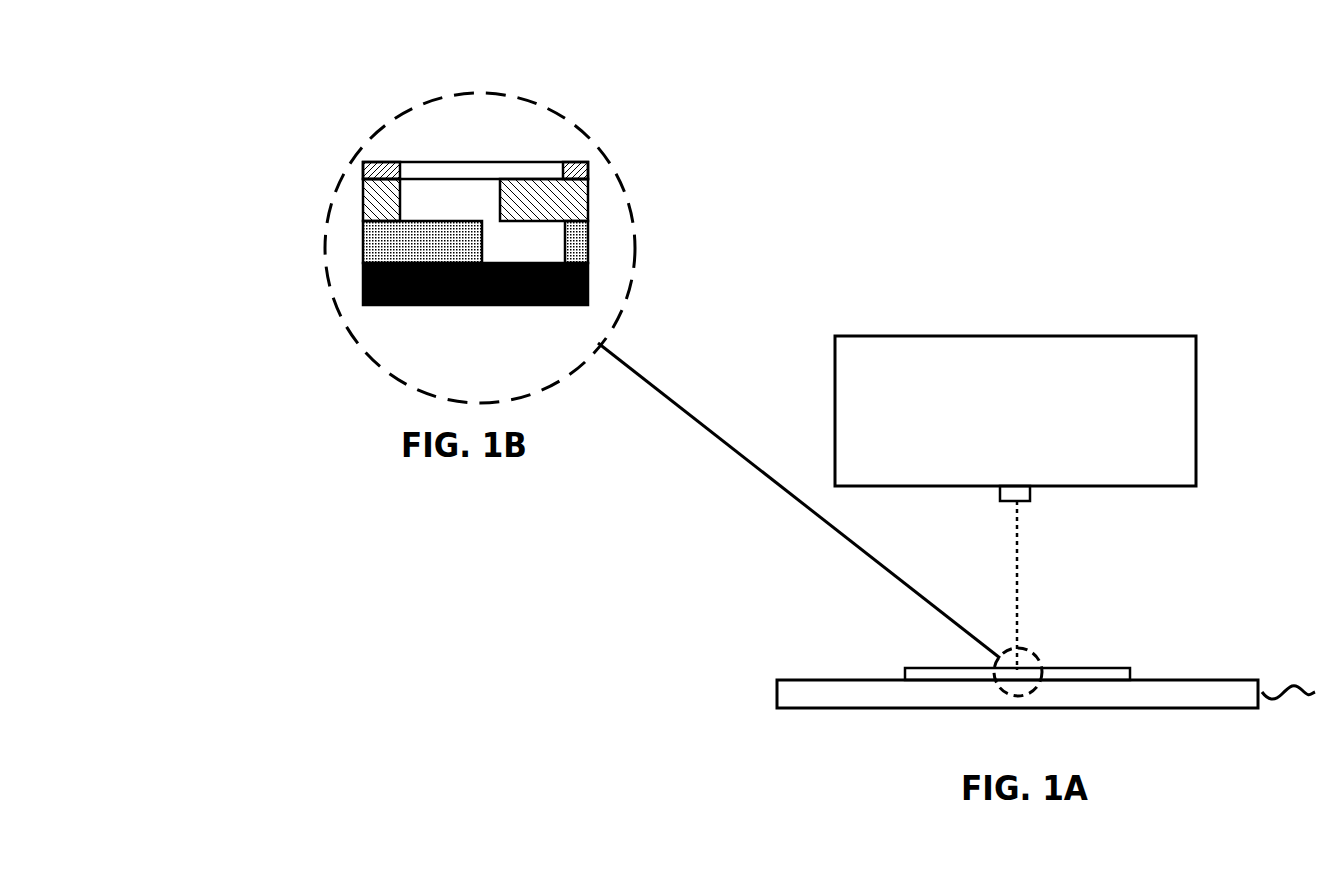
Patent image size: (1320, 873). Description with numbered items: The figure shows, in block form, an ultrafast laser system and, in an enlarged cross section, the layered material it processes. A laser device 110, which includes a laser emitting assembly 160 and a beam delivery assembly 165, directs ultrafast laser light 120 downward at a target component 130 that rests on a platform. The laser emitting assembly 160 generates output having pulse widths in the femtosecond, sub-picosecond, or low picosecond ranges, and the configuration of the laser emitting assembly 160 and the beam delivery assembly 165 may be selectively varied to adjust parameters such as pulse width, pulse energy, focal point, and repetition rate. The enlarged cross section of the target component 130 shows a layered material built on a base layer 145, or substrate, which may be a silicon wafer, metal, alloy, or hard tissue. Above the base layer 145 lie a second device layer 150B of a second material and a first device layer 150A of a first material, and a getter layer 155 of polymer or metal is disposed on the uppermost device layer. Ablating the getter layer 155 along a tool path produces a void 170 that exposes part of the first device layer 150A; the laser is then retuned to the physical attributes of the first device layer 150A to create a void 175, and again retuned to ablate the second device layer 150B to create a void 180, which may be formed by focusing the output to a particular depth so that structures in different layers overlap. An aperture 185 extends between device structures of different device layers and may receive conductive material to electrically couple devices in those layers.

In FIG. 1A, the laser device 110 is at (1222, 338).
In FIG. 1A, the ultrafast laser light 120 is at (1017, 573).
In FIG. 1A, the target component 130 is at (1130, 668).
In FIG. 1B, the base layer 145 is at (363, 283).
In FIG. 1B, the first device layer 150A is at (363, 200).
In FIG. 1B, the second device layer 150B is at (363, 242).
In FIG. 1B, the getter layer 155 is at (363, 171).
In FIG. 1A, the laser emitting assembly 160 is at (1196, 412).
In FIG. 1A, the beam delivery assembly 165 is at (1032, 500).
In FIG. 1B, the void 170 is at (423, 167).
In FIG. 1B, the void 175 is at (435, 208).
In FIG. 1B, the void 180 is at (522, 243).
In FIG. 1B, the aperture 185 is at (492, 217).